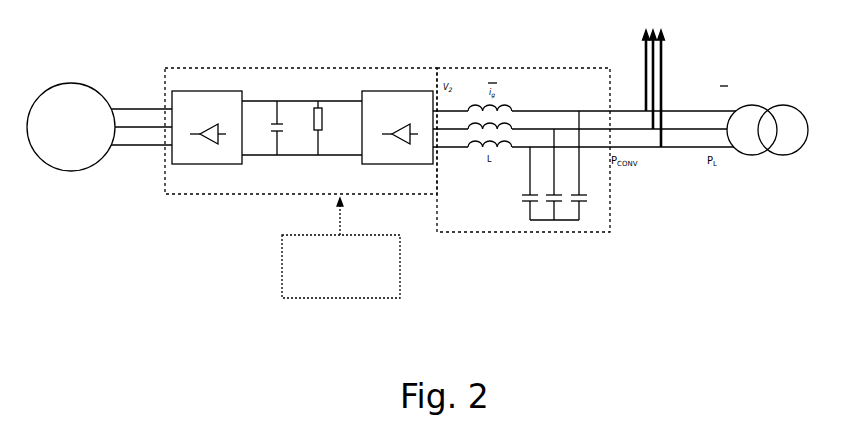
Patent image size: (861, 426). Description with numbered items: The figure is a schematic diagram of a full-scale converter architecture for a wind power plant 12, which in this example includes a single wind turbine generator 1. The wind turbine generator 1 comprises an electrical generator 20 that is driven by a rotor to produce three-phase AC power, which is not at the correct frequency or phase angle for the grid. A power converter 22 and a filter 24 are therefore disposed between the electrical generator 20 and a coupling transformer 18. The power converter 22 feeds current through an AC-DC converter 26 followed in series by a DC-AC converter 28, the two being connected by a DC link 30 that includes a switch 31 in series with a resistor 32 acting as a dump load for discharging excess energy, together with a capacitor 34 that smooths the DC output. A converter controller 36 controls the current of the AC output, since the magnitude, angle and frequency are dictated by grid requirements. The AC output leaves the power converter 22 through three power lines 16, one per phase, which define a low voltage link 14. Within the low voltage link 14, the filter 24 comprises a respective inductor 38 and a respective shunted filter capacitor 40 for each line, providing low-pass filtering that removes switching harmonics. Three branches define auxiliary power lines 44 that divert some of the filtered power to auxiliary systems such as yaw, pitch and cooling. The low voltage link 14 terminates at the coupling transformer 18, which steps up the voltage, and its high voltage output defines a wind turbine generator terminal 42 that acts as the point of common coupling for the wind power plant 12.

The wind turbine generator 1 is at (92, 270).
The wind power plant 12 is at (668, 290).
The low voltage link 14 is at (684, 176).
The low voltage lines 16 is at (710, 129).
The coupling transformer 18 is at (779, 121).
The electrical generator 20 is at (68, 163).
The power converter 22 is at (180, 190).
The filter 24 is at (487, 216).
The AC-DC converter 26 is at (220, 91).
The DC-AC converter 28 is at (369, 91).
The DC link 30 is at (277, 166).
The switch 31 is at (318, 137).
The resistor 32 is at (317, 108).
The capacitor 34 is at (275, 122).
The converter controller 36 is at (376, 257).
The inductor 38 is at (510, 126).
The filter capacitor 40 is at (574, 222).
The wind turbine generator terminal 42 is at (806, 138).
The auxiliary power lines 44 is at (641, 45).